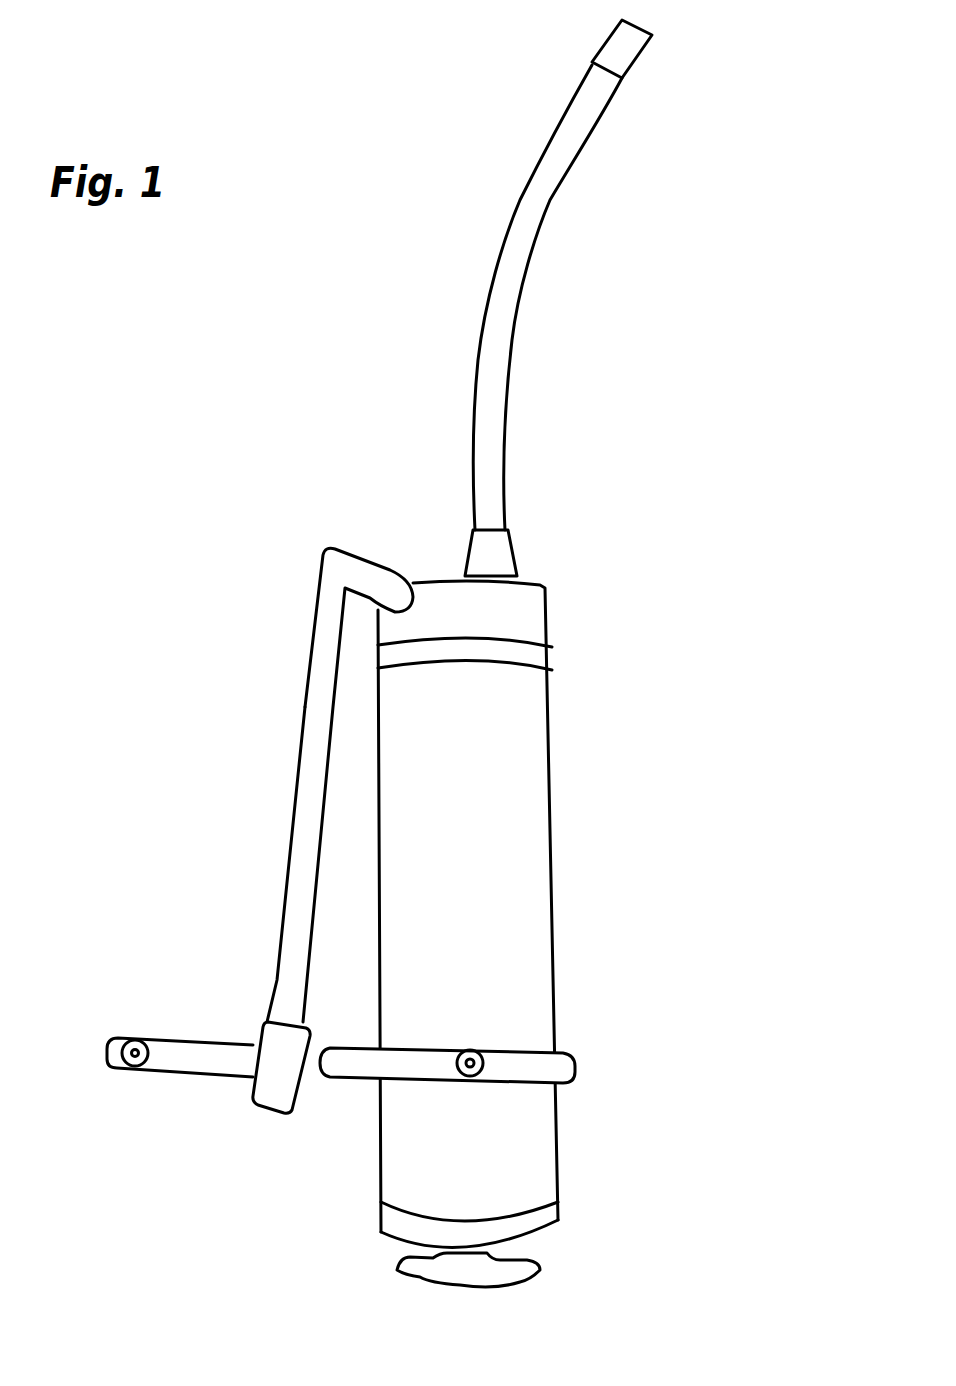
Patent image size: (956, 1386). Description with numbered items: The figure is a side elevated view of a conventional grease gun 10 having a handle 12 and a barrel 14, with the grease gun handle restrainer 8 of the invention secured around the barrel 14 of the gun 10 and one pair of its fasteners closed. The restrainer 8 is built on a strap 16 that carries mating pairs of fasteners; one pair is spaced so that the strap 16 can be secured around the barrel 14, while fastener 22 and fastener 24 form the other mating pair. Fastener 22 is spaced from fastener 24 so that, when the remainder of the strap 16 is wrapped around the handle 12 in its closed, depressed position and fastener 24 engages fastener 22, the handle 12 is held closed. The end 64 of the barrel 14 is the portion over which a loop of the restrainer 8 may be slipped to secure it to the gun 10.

The restrainer 8 is at (333, 1127).
The grease gun 10 is at (422, 665).
The handle 12 is at (303, 820).
The barrel 14 is at (482, 942).
The strap 16 is at (560, 1075).
The fastener 22 is at (477, 1070).
The fastener 24 is at (130, 1050).
The end of the barrel 64 is at (395, 1232).